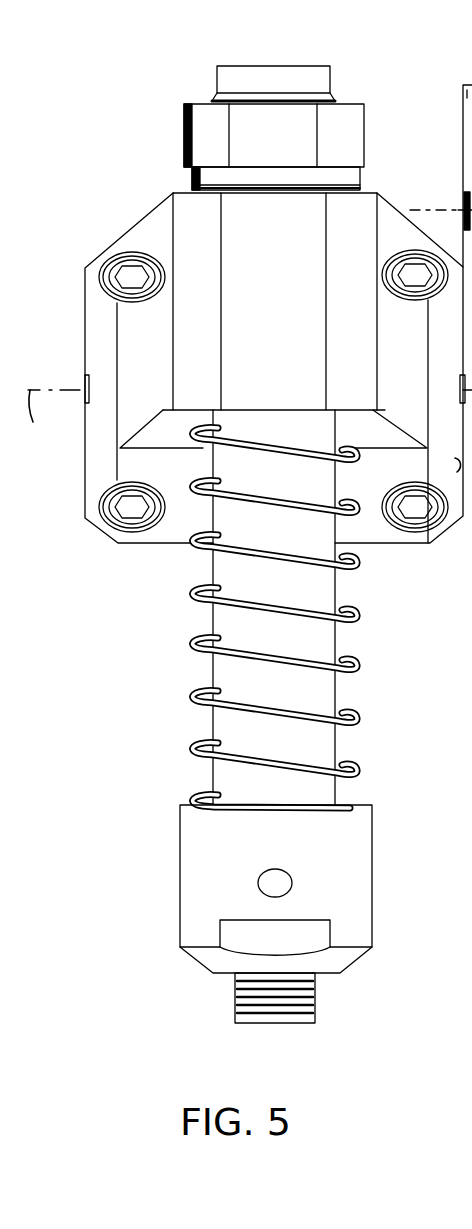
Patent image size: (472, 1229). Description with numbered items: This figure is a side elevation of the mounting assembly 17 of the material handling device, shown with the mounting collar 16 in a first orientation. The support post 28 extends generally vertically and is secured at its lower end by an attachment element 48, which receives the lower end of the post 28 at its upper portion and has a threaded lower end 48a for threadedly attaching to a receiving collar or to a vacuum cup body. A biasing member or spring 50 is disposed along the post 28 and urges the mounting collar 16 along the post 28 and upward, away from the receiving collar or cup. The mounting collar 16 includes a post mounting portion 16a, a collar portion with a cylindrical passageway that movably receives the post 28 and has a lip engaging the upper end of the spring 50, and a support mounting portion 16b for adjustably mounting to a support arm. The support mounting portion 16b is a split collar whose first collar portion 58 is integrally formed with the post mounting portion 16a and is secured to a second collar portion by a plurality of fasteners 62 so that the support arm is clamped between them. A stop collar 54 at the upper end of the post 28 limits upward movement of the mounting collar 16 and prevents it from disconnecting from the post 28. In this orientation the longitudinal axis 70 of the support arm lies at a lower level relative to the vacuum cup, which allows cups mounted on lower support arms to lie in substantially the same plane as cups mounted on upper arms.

The mounting assembly 17 is at (176, 62).
The stop collar 54 is at (345, 124).
The first collar portion 58 is at (471, 138).
The mounting collar 16 is at (103, 188).
The post mounting portion 16a is at (202, 227).
The support mounting portion 16b is at (98, 334).
The fasteners 62 is at (130, 274).
The longitudinal axis 70 is at (249, 426).
The support post 28 is at (228, 668).
The spring 50 is at (200, 690).
The attachment element 48 is at (207, 853).
The threaded lower end 48a is at (282, 1023).